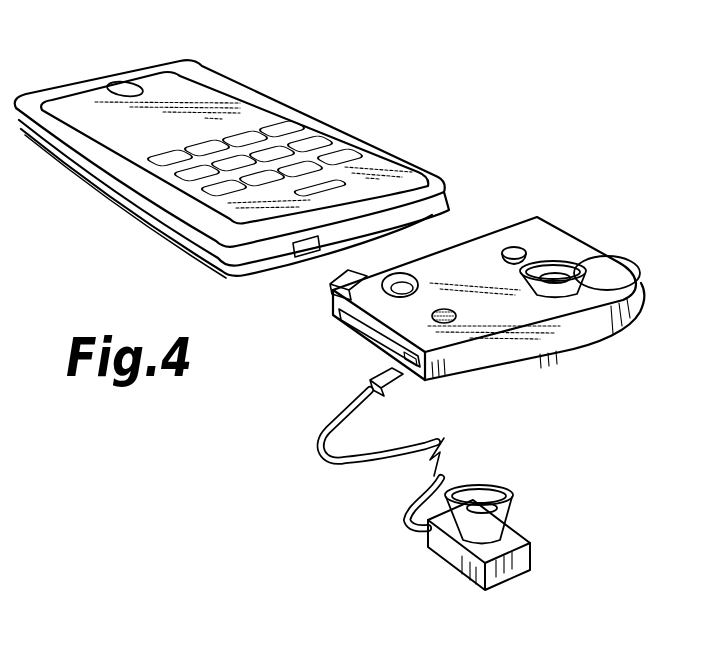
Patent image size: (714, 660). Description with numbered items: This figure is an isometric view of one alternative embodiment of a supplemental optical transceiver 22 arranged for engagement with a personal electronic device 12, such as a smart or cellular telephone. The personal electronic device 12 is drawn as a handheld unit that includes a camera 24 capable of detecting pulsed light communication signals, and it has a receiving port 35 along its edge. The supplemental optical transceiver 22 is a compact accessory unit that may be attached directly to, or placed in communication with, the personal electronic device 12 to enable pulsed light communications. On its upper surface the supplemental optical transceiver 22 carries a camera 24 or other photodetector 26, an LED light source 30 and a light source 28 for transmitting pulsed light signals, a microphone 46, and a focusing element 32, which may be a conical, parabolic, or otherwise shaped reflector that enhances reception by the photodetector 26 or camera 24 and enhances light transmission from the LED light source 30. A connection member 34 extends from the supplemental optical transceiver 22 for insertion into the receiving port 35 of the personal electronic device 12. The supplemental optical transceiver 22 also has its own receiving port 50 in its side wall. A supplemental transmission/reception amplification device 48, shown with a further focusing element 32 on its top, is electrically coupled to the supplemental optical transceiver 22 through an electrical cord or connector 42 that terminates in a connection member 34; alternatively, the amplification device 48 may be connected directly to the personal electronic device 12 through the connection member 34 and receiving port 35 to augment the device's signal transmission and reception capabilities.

The personal electronic device 12 is at (314, 109).
The supplemental optical transceiver 22 is at (588, 243).
The camera 24 is at (115, 87).
The photodetector 26 is at (590, 258).
The light source 28 is at (400, 282).
The LED light source 30 is at (472, 238).
The focusing element 32 is at (406, 282).
The connection member 34 is at (313, 266).
The receiving port 35 is at (287, 283).
The electrical cord or connector 42 is at (370, 465).
The microphone 46 is at (458, 322).
The supplemental transmission/reception amplification device 48 is at (520, 560).
The receiving port 50 is at (418, 376).